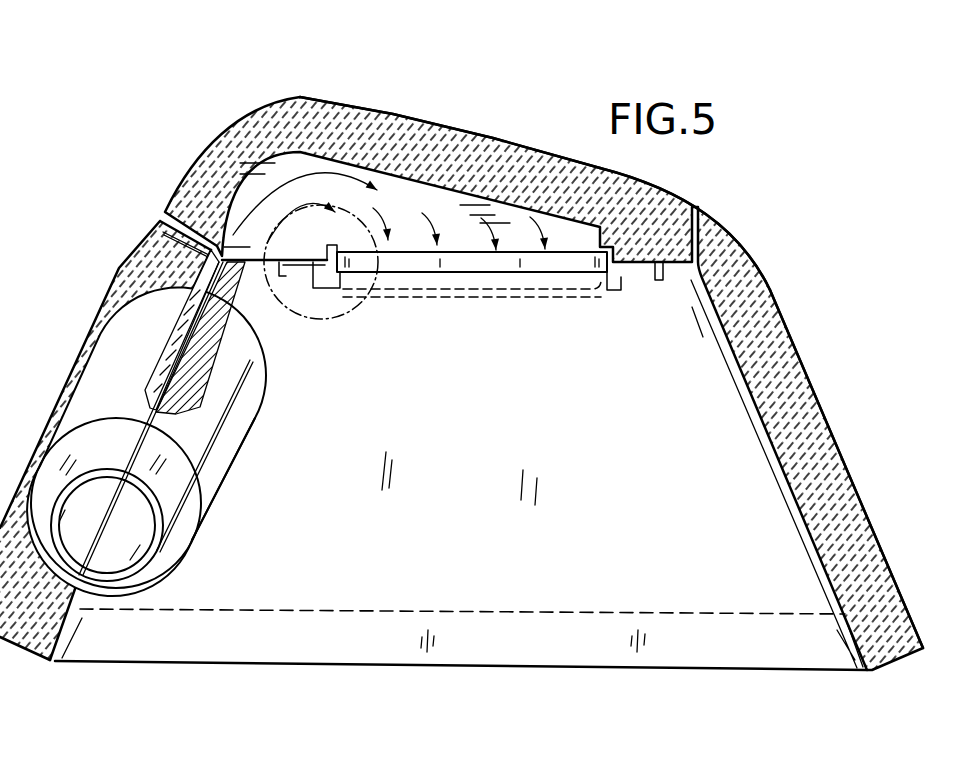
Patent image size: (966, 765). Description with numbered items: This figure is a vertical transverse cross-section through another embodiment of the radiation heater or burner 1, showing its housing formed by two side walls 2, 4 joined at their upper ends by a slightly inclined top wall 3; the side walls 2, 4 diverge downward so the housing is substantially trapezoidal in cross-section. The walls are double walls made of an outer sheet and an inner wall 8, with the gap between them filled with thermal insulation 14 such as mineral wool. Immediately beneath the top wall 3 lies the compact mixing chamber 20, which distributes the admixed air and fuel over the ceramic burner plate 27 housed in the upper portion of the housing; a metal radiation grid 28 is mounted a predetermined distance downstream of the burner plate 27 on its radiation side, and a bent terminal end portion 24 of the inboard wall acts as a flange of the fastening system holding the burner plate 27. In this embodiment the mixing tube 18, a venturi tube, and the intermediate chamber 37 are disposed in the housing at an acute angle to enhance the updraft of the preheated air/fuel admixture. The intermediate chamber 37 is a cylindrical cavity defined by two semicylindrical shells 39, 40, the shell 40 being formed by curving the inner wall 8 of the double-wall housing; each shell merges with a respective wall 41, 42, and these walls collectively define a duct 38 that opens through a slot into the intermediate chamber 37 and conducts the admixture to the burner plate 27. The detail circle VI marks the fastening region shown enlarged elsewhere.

The radiation burner 1 is at (392, 112).
The side wall 2 is at (136, 243).
The top wall 3 is at (514, 135).
The side wall 4 is at (803, 333).
The inner wall 8 is at (407, 180).
The thermal insulation 14 is at (753, 261).
The mixing tube 18 is at (162, 507).
The mixing chamber 20 is at (444, 196).
The terminal end portion 24 is at (272, 252).
The ceramic burner plate 27 is at (437, 263).
The radiation grid 28 is at (538, 300).
The intermediate chamber 37 is at (243, 450).
The duct 38 is at (218, 367).
The semicylindrical shell 39 is at (207, 455).
The semicylindrical shell 40 is at (120, 325).
The wall 41 is at (197, 376).
The wall 42 is at (155, 383).
The detail circle VI is at (358, 306).